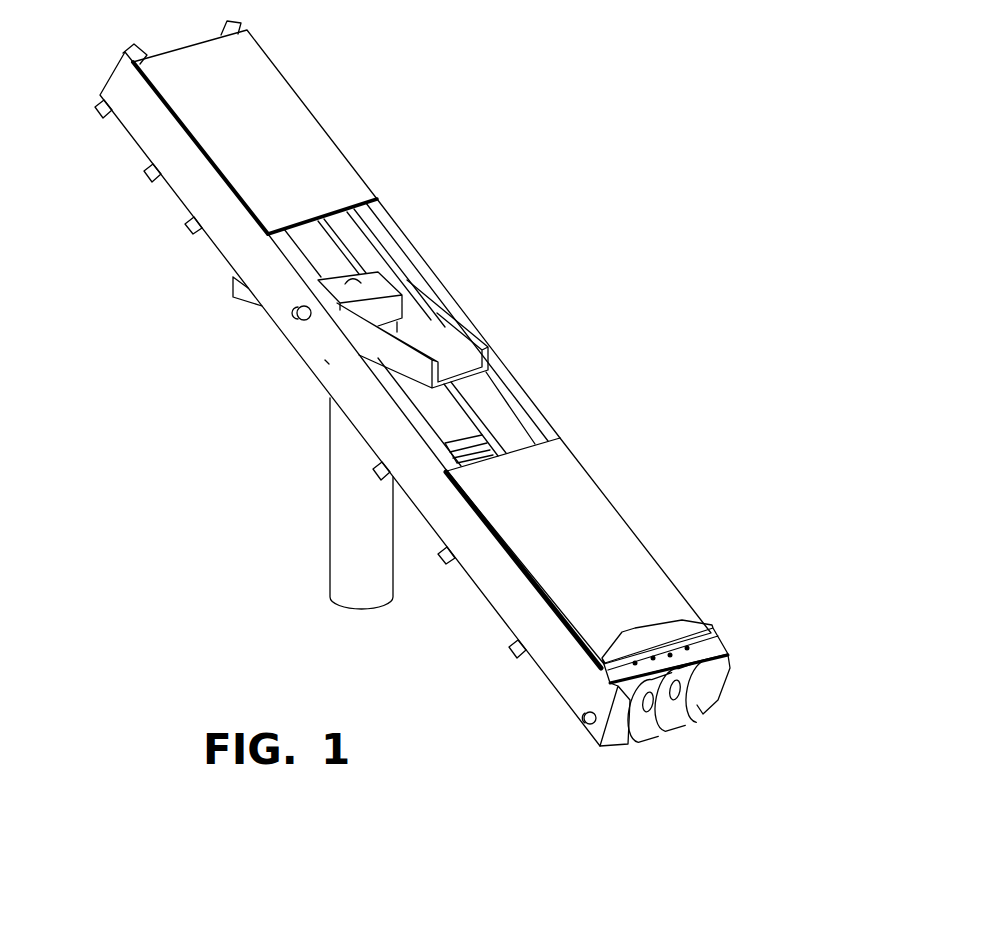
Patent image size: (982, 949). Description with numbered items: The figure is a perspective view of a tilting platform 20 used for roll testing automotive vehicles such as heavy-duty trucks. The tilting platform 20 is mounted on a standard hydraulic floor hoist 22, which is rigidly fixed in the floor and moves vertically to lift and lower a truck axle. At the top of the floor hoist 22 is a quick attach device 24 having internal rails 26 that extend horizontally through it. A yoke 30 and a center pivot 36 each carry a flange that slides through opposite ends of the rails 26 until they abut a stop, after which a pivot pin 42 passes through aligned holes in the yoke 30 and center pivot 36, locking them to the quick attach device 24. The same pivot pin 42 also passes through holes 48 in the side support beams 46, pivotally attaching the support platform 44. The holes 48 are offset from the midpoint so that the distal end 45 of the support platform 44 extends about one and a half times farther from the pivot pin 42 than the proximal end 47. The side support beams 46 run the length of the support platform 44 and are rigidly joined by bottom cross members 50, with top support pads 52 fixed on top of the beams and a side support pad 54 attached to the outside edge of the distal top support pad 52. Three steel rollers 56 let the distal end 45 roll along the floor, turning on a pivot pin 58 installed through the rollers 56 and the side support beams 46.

The tilting platform 20 is at (575, 176).
The floor hoist 22 is at (329, 548).
The quick attach device 24 is at (413, 366).
The internal rails 26 is at (440, 341).
The yoke 30 is at (388, 290).
The center pivot 36 is at (355, 283).
The pivot pin 42 is at (317, 317).
The support platform 44 is at (400, 221).
The distal end 45 is at (725, 700).
The side support beams 46 is at (348, 365).
The proximal end 47 is at (121, 68).
The holes in side support beams 48 is at (327, 362).
The bottom cross members 50 is at (153, 176).
The top support pads 52 is at (292, 119).
The side support pad 54 is at (657, 625).
The rollers 56 is at (630, 745).
The pivot pin 58 is at (583, 724).